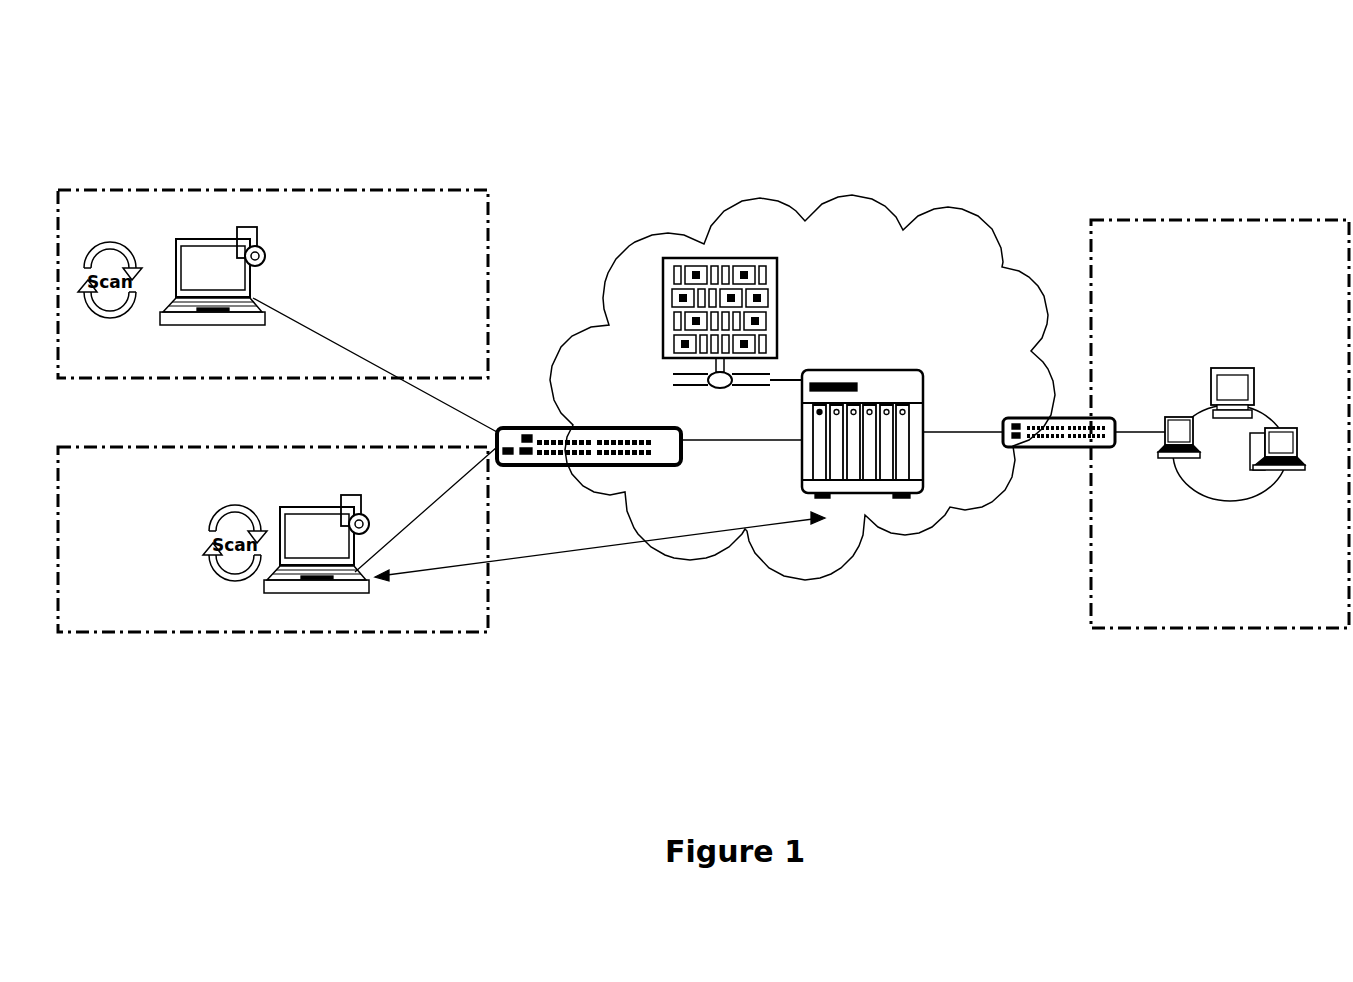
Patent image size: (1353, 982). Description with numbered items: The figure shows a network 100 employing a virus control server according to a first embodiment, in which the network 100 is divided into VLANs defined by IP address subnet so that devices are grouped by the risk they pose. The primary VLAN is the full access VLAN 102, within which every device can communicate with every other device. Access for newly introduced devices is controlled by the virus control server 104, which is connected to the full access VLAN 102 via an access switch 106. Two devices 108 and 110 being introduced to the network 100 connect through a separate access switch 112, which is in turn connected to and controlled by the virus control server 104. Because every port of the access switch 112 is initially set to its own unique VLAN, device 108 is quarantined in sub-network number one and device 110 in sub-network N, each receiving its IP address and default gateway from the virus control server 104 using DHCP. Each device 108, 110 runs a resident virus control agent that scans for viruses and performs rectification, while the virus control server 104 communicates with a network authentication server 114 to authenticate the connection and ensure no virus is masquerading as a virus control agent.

The network 100 is at (925, 97).
The full access VLAN 102 is at (1255, 345).
The virus control server 104 is at (909, 372).
The access switch 106 is at (1082, 448).
The device 108 is at (204, 240).
The device 110 is at (298, 590).
The access switch 112 is at (592, 438).
The network authentication server 114 is at (710, 258).